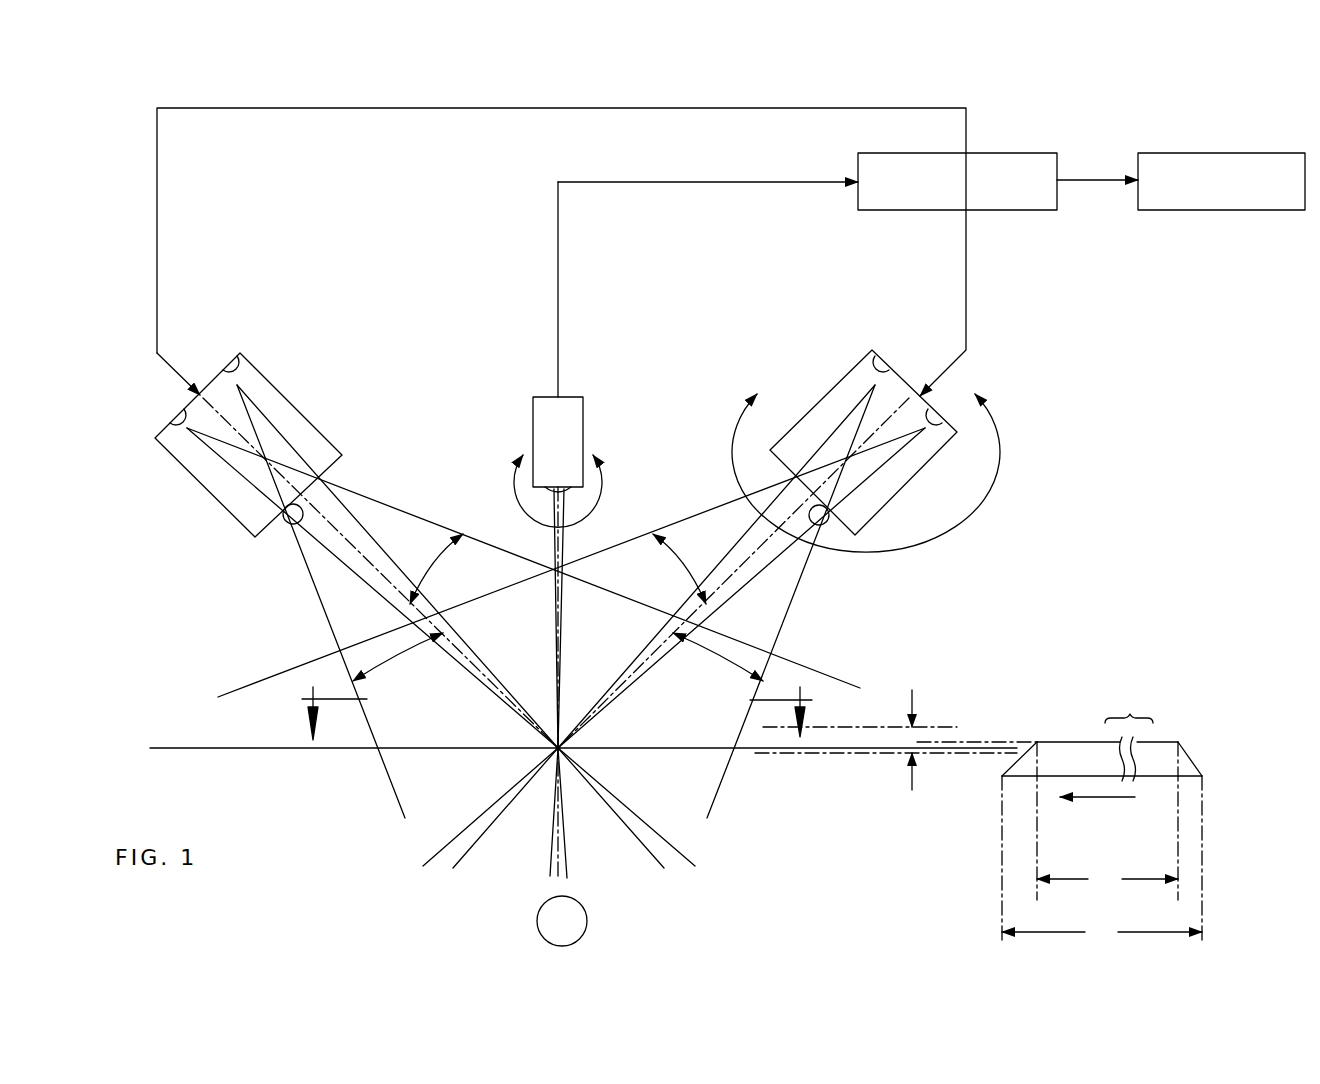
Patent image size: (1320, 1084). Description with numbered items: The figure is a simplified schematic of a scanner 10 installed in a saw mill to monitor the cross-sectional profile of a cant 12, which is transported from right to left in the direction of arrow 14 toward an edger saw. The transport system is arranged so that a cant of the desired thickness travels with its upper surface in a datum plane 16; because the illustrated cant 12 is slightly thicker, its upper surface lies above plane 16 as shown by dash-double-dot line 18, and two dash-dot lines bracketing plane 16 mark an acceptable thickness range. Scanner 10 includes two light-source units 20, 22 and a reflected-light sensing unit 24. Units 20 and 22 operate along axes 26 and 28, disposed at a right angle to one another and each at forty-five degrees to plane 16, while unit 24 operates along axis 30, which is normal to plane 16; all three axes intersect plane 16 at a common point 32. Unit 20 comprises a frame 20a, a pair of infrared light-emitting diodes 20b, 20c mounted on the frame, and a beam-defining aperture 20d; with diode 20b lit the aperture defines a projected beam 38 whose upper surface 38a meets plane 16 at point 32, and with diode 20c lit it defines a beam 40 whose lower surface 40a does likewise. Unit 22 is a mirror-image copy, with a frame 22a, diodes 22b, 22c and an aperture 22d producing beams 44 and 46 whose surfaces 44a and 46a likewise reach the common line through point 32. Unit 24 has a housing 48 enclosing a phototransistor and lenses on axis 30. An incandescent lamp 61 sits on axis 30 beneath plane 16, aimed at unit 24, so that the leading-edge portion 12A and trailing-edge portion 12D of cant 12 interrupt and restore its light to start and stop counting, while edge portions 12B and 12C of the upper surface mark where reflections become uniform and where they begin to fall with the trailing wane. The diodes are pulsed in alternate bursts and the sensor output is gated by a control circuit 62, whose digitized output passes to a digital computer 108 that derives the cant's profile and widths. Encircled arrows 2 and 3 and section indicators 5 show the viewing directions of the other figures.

The scanner 10 is at (130, 203).
The cant 12 is at (1105, 801).
The leading-edge portion 12A is at (1002, 778).
The edge portion 12B is at (1037, 742).
The edge portion 12C is at (1178, 742).
The trailing-edge portion 12D is at (1203, 779).
The arrow 14 is at (1105, 800).
The datum plane 16 is at (657, 743).
The dash-double-dot line 18 is at (953, 742).
The light-source unit 20 is at (272, 558).
The frame 20a is at (367, 404).
The infrared light-emitting diode 20b is at (278, 322).
The infrared light-emitting diode 20c is at (173, 453).
The beam-defining aperture 20d is at (287, 533).
The light-source unit 22 is at (832, 555).
The frame 22a is at (805, 413).
The infrared light-emitting diode 22b is at (863, 358).
The infrared light-emitting diode 22c is at (935, 430).
The beam-defining aperture 22d is at (818, 527).
The light-sensing unit 24 is at (591, 601).
The axis 26 is at (365, 520).
The axis 28 is at (762, 541).
The axis 30 is at (562, 652).
The common point 32 is at (556, 750).
The projected beam 38 is at (410, 660).
The upper defined surface 38a is at (527, 637).
The projected beam 40 is at (440, 570).
The defined lower surface 40a is at (453, 667).
The projected beam 44 is at (713, 663).
The upper surface 44a is at (657, 630).
The projected beam 46 is at (688, 573).
The lower surface 46a is at (657, 673).
The housing 48 is at (583, 428).
The incandescent lamp 61 is at (588, 910).
The control circuit 62 is at (1013, 153).
The digital computer 108 is at (1255, 153).
The view direction of FIG. 2 is at (868, 469).
The view direction of FIG. 3 is at (558, 490).
The section line of FIG. 5 is at (556, 705).